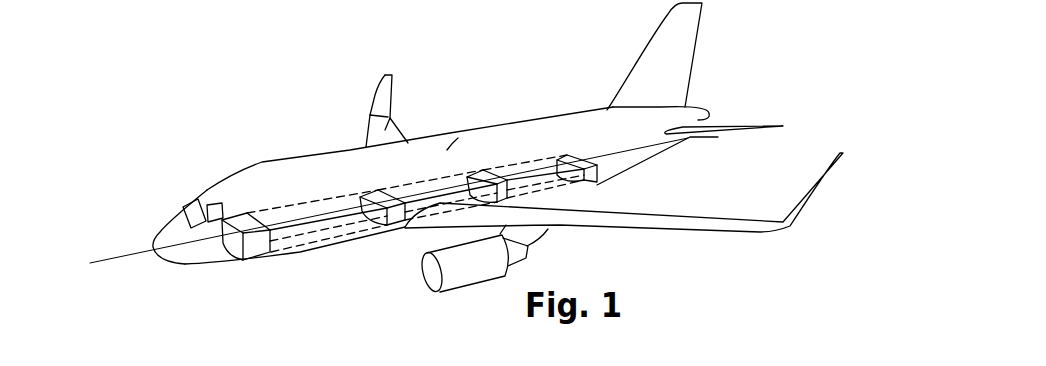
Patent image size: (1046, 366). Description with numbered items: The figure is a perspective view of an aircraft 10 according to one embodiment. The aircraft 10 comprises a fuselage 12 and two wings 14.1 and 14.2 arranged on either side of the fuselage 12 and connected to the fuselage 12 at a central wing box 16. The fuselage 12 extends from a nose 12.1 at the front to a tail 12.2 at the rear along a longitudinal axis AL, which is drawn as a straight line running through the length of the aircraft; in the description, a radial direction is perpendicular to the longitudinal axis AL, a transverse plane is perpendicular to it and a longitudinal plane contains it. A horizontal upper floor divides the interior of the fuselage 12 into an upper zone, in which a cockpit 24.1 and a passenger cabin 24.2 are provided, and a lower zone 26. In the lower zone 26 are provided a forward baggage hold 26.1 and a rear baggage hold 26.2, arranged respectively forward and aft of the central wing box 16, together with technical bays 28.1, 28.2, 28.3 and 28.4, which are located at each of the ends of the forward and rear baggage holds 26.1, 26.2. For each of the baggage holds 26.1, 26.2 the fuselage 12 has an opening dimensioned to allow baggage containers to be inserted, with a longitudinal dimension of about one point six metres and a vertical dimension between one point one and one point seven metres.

The aircraft 10 is at (273, 87).
The fuselage 12 is at (260, 163).
The nose 12.1 is at (153, 242).
The tail 12.2 is at (703, 115).
The wing 14.1 is at (633, 218).
The wing 14.2 is at (403, 110).
The central wing box 16 is at (428, 217).
The cockpit 24.1 is at (191, 206).
The passenger cabin 24.2 is at (447, 150).
The lower zone 26 is at (293, 250).
The forward baggage hold 26.1 is at (347, 237).
The rear baggage hold 26.2 is at (530, 163).
The technical bay 28.1 is at (250, 250).
The technical bay 28.2 is at (367, 197).
The technical bay 28.3 is at (493, 175).
The technical bay 28.4 is at (579, 170).
The longitudinal axis AL is at (110, 258).